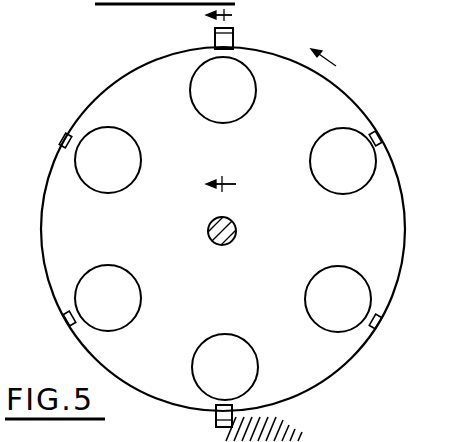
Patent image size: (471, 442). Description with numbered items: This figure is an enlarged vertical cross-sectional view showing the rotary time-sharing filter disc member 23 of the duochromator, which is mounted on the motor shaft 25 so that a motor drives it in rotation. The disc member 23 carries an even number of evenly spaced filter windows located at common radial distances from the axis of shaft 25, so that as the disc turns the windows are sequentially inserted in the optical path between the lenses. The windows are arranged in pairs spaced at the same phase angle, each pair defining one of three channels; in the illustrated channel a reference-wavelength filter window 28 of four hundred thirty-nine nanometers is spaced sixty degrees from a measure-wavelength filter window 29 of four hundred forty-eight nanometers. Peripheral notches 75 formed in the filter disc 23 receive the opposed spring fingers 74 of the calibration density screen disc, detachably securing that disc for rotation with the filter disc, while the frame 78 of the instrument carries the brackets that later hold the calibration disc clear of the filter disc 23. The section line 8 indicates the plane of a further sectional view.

The rotary time-sharing filter disc member 23 is at (405, 219).
The 448 nm filter window 29 is at (255, 93).
The 439 nm filter window 28 is at (350, 193).
The motor shaft 25 is at (236, 229).
The section line 8 is at (232, 101).
The spring fingers 74 is at (214, 37).
The peripheral notches 75 is at (66, 134).
The frame 78 is at (285, 425).